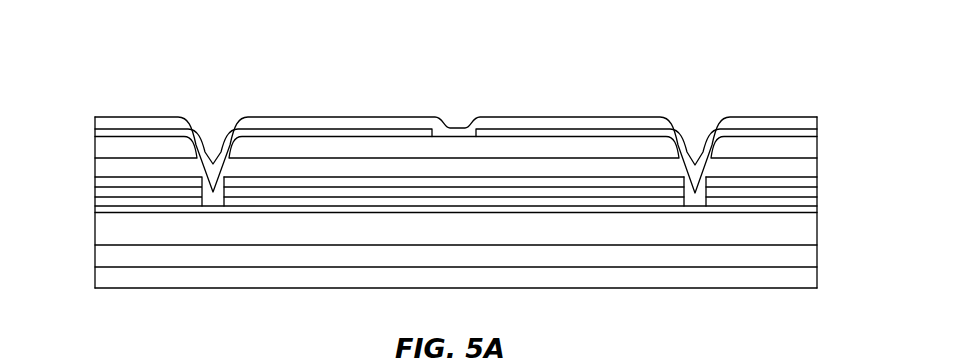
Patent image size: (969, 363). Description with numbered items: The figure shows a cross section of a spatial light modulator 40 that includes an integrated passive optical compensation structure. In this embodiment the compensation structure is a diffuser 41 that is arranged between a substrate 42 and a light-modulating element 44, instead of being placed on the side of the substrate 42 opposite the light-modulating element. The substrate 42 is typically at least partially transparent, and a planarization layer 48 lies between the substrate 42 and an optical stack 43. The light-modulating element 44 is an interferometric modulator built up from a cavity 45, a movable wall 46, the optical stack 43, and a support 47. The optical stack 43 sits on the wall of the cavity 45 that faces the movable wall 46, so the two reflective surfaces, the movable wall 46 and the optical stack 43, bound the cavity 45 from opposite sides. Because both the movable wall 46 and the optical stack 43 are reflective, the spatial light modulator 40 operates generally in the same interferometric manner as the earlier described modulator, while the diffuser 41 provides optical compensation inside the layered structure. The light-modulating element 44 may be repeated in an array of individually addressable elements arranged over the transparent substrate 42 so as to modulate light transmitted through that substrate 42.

The spatial light modulator 40 is at (143, 68).
The diffuser 41 is at (817, 258).
The substrate 42 is at (95, 277).
The optical stack 43 is at (822, 177).
The light-modulating element 44 is at (92, 115).
The cavity 45 is at (676, 165).
The movable wall 46 is at (455, 134).
The support 47 is at (517, 128).
The planarization layer 48 is at (95, 228).